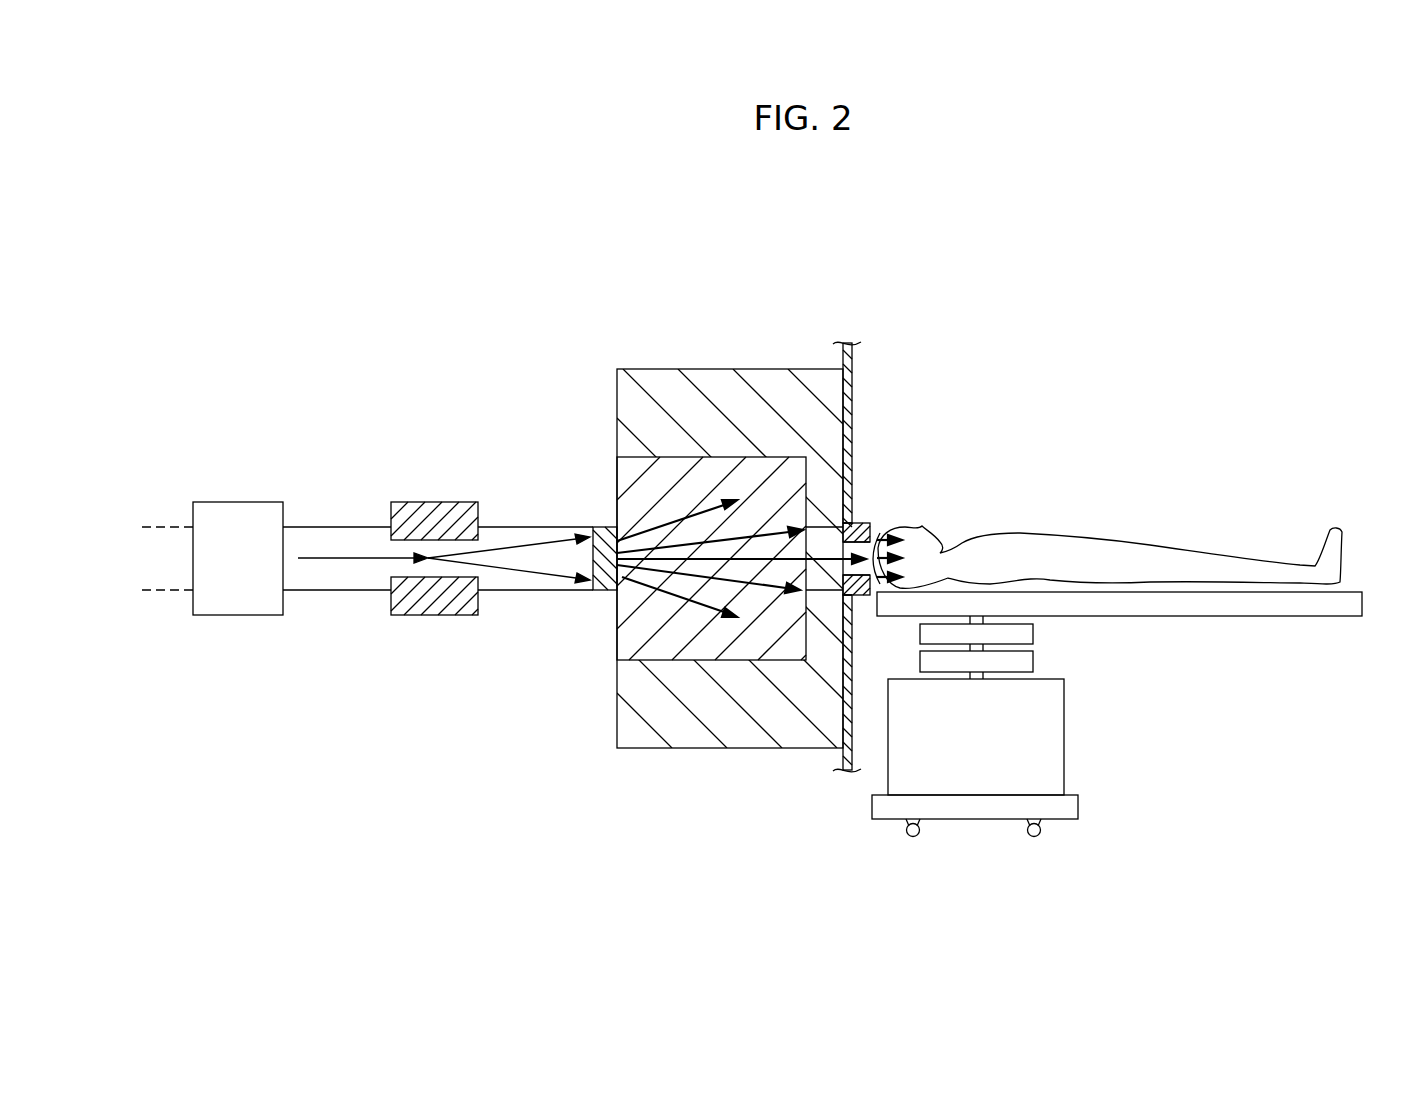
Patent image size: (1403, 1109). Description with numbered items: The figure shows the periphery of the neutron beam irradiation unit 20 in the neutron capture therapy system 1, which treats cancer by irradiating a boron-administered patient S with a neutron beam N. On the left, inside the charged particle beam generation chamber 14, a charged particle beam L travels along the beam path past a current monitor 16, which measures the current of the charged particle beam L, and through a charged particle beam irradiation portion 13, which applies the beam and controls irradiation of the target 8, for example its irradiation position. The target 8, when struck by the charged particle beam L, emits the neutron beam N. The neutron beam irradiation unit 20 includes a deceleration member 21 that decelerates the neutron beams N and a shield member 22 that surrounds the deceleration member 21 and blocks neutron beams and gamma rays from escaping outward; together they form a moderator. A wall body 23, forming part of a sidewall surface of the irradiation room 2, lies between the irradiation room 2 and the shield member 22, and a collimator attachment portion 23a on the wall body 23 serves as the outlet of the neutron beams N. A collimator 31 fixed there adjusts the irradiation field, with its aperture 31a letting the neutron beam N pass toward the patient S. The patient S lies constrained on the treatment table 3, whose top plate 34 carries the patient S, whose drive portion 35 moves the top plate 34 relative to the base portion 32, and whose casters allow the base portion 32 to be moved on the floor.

The neutron capture therapy system 1 is at (1068, 377).
The irradiation room 2 is at (965, 383).
The treatment table 3 is at (1100, 762).
The target 8 is at (600, 528).
The charged particle beam irradiation portion 13 is at (437, 503).
The charged particle beam generation chamber 14 is at (446, 331).
The current monitor 16 is at (237, 503).
The neutron beam irradiation unit 20 is at (741, 488).
The deceleration member 21 is at (680, 470).
The shield member 22 is at (781, 382).
The wall body 23 is at (855, 377).
The collimator attachment portion 23a is at (850, 521).
The collimator 31 is at (868, 522).
The aperture of collimator 31a is at (855, 563).
The base portion 32 is at (1053, 765).
The top plate 34 is at (1215, 618).
The drive portion 35 is at (932, 660).
The charged particle beam L is at (340, 554).
The neutron beam N is at (828, 552).
The patient S is at (1052, 540).